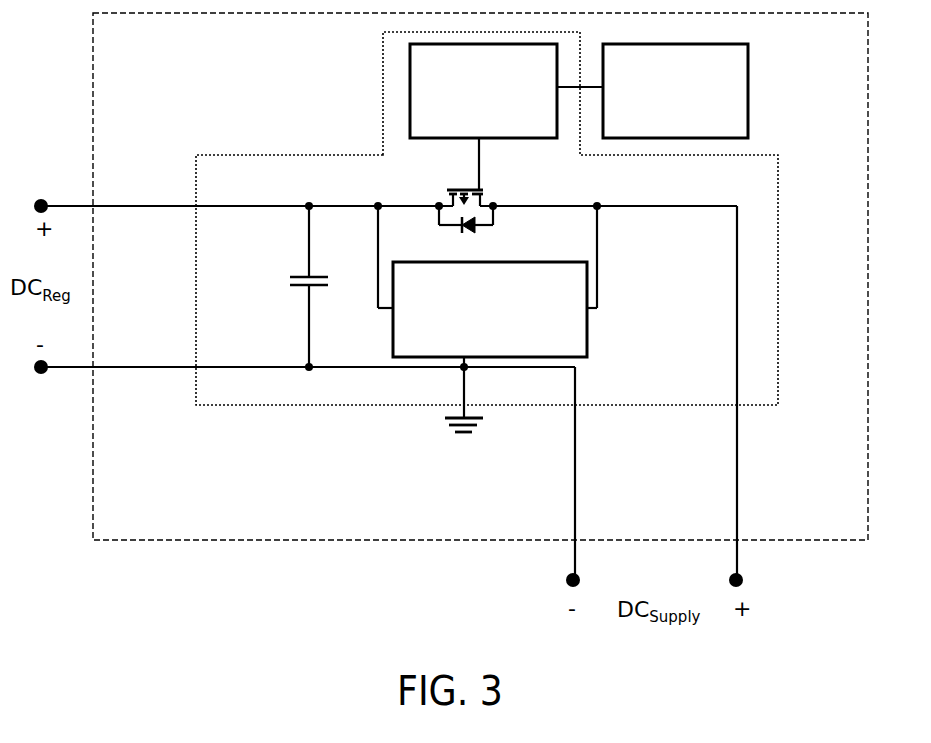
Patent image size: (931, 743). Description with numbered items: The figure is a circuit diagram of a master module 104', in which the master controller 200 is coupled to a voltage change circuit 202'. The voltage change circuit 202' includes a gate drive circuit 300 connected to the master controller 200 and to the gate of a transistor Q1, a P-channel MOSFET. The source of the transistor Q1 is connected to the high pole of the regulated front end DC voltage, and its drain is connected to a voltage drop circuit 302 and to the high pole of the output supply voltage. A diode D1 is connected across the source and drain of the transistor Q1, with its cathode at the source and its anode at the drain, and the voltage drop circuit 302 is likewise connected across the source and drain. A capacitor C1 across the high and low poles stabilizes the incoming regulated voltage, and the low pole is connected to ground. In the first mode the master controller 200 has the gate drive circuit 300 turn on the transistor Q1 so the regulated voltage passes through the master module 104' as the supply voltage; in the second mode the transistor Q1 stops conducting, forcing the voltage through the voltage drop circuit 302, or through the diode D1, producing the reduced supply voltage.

The master module 104' is at (480, 276).
The voltage change circuit 202' is at (487, 218).
The gate drive circuit 300 is at (503, 131).
The master controller 200 is at (696, 131).
The voltage drop circuit 302 is at (508, 347).
The transistor Q1 is at (484, 172).
The diode D1 is at (469, 231).
The capacitor C1 is at (290, 286).